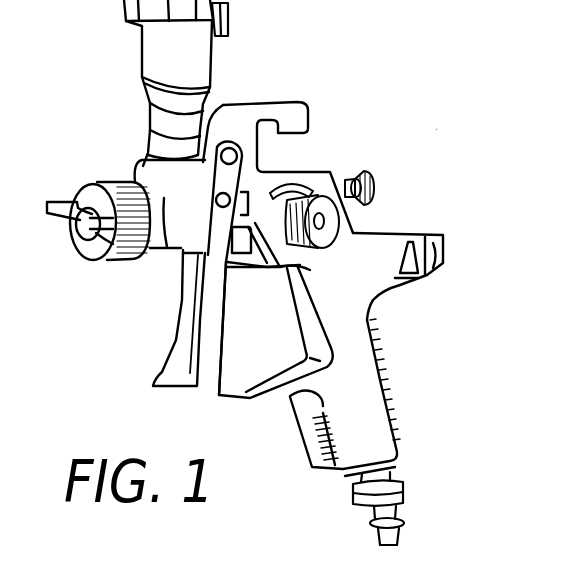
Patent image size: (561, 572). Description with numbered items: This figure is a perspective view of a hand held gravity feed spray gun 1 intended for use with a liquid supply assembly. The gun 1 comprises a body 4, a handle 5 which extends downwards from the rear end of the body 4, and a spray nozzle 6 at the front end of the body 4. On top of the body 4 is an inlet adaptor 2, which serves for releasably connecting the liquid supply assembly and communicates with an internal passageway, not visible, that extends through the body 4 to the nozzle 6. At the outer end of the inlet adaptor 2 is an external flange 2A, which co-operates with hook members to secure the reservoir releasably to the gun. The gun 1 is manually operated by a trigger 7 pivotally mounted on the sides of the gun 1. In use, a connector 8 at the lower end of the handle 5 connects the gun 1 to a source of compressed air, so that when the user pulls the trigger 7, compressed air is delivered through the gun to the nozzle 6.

The spray gun 1 is at (444, 125).
The inlet adaptor 2 is at (150, 62).
The external flange 2A is at (230, 21).
The body 4 is at (298, 170).
The handle 5 is at (343, 308).
The spray nozzle 6 is at (84, 245).
The trigger 7 is at (173, 376).
The connector 8 is at (403, 505).